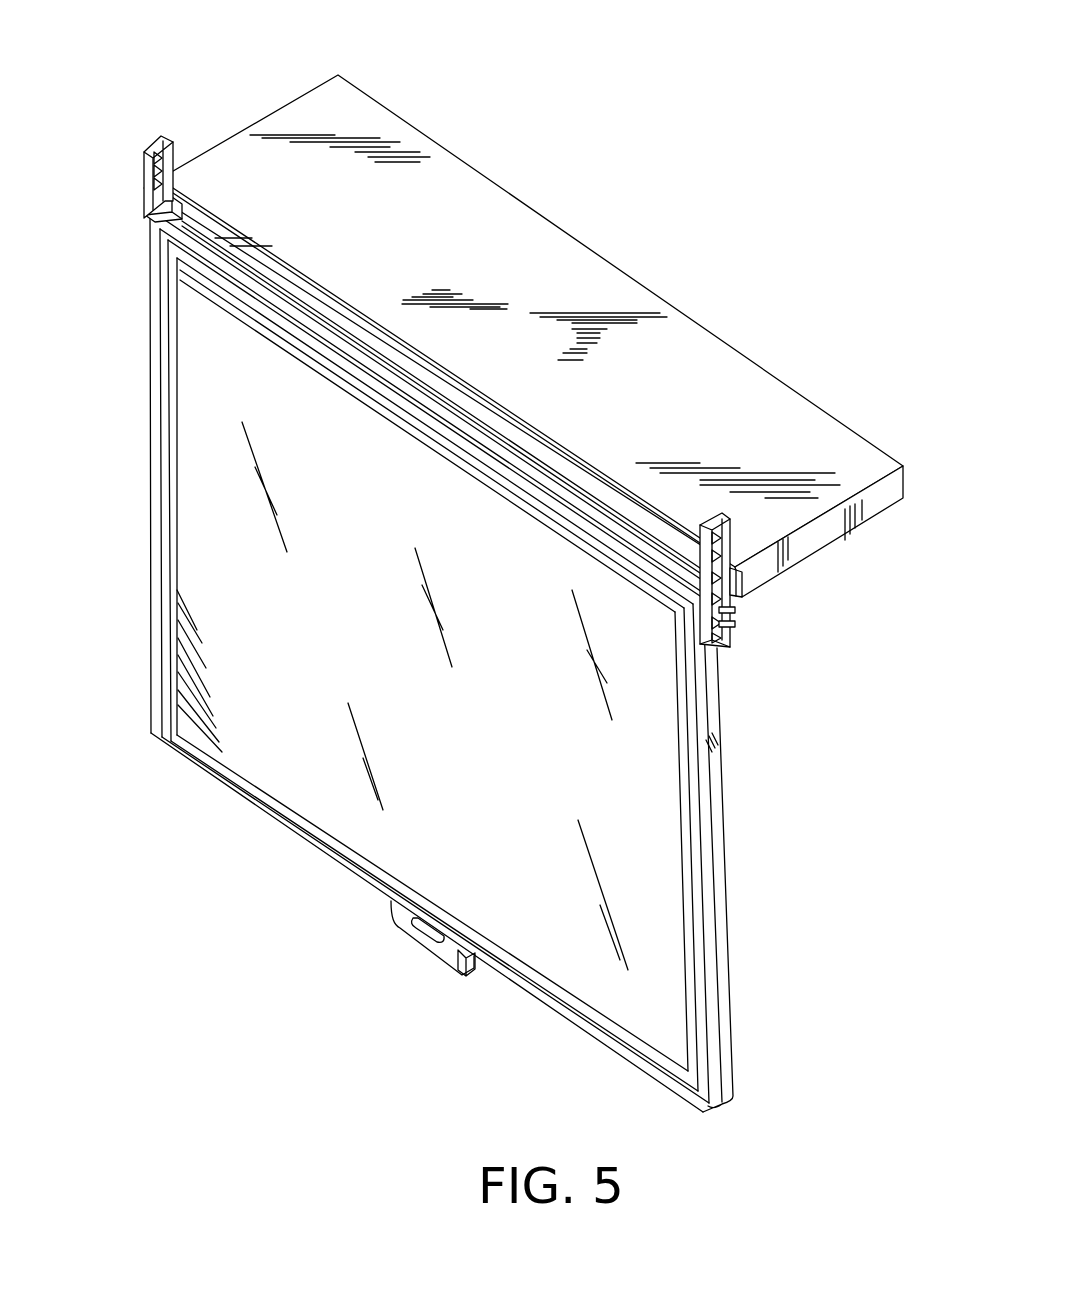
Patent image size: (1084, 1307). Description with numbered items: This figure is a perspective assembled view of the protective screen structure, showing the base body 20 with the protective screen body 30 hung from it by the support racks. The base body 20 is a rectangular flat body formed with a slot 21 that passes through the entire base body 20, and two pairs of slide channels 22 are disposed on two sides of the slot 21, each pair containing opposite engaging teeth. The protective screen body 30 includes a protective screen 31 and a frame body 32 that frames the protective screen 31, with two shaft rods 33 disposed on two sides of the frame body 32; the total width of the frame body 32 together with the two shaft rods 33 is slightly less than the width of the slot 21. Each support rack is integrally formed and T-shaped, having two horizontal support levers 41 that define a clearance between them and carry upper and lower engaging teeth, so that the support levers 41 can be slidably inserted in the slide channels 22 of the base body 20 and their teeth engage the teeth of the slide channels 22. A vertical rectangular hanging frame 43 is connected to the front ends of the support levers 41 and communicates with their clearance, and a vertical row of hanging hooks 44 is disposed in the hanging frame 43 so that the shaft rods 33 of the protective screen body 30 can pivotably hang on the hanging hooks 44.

The base body 20 is at (832, 535).
The slot 21 is at (207, 222).
The slide channels 22 is at (742, 582).
The protective screen body 30 is at (748, 876).
The protective screen 31 is at (727, 962).
The frame body 32 is at (578, 945).
The shaft rods 33 is at (735, 612).
The support levers 41 is at (147, 208).
The hanging frame 43 is at (178, 148).
The hanging hooks 44 is at (733, 630).